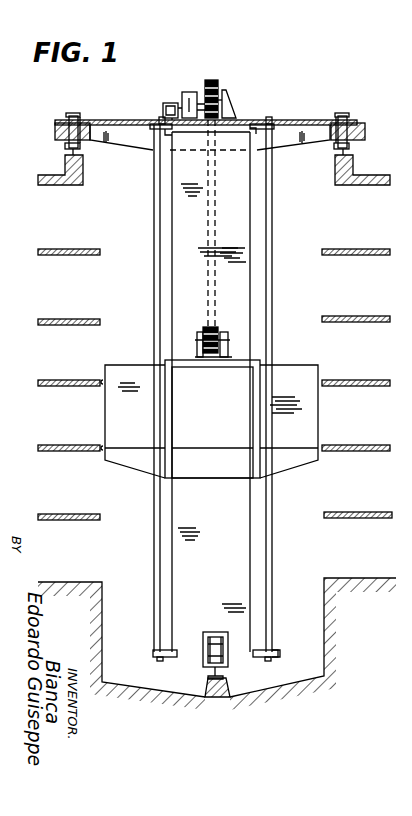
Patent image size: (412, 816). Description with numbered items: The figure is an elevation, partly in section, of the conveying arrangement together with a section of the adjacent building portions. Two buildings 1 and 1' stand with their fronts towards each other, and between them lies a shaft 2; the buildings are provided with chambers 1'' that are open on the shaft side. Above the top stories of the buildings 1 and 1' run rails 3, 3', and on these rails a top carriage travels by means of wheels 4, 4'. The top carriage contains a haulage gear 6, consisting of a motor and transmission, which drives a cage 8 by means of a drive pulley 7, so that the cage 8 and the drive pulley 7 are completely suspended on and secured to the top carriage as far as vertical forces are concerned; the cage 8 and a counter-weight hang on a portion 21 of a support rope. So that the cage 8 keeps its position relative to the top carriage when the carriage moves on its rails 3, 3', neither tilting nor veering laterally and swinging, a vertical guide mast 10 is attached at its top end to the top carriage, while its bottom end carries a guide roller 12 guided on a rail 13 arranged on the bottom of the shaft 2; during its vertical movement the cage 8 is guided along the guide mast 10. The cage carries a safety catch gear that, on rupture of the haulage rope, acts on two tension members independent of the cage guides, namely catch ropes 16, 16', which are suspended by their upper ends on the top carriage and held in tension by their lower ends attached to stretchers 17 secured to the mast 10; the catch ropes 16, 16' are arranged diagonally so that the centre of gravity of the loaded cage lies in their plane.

The building 1 is at (23, 147).
The building 1' is at (357, 361).
The chambers 1'' is at (69, 363).
The shaft 2 is at (209, 369).
The rail 3 is at (57, 165).
The rail 3' is at (362, 164).
The wheel 4 is at (71, 122).
The wheel 4' is at (352, 121).
The haulage gear 6 is at (170, 104).
The drive pulley 7 is at (216, 92).
The cage 8 is at (190, 357).
The vertical guide mast 10 is at (176, 574).
The guide roller 12 is at (206, 650).
The rail 13 is at (224, 677).
The catch rope 16 is at (153, 389).
The catch rope 16' is at (276, 389).
The stretchers 17 is at (279, 654).
The portion of support rope 21 is at (217, 231).